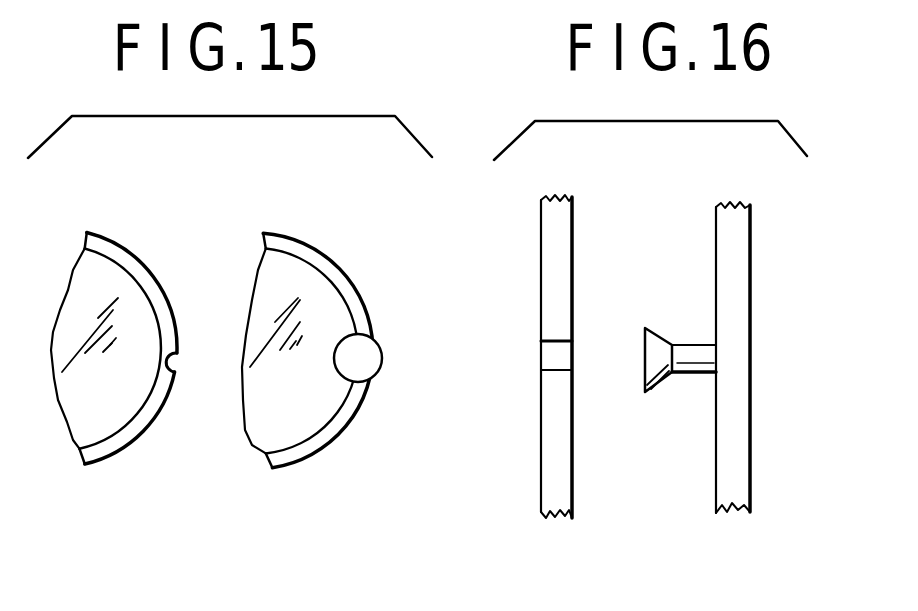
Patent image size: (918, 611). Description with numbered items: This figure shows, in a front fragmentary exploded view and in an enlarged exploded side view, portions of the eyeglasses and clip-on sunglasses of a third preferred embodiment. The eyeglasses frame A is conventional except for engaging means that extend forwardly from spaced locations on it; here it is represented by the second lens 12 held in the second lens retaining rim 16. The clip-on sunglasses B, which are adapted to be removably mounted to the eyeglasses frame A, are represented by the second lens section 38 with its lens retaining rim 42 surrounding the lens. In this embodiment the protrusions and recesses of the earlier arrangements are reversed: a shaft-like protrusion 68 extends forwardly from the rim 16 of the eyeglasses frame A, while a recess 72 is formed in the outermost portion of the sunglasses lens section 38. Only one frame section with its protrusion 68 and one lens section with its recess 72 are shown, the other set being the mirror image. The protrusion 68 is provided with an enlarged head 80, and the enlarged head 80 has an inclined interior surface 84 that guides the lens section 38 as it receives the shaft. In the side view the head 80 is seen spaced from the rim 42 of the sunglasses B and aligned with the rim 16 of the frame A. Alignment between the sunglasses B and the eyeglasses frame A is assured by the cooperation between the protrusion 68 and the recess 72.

In FIG. 15, the second lens 12 is at (305, 412).
In FIG. 15, the second lens retaining rim 16 is at (333, 428).
In FIG. 16, the second lens retaining rim 16 is at (730, 483).
In FIG. 15, the second lens section 38 is at (121, 410).
In FIG. 15, the lens retaining rim 42 is at (130, 252).
In FIG. 16, the lens retaining rim 42 is at (572, 260).
In FIG. 15, the protrusion 68 is at (381, 338).
In FIG. 16, the protrusion 68 is at (695, 345).
In FIG. 15, the recess 72 is at (178, 360).
In FIG. 16, the recess 72 is at (548, 357).
In FIG. 15, the enlarged head 80 is at (382, 373).
In FIG. 16, the enlarged head 80 is at (643, 367).
In FIG. 16, the inclined interior surface 84 is at (660, 382).
In FIG. 15, the eyeglasses frame A is at (323, 257).
In FIG. 16, the eyeglasses frame A is at (754, 363).
In FIG. 15, the clip-on sunglasses B is at (107, 473).
In FIG. 16, the clip-on sunglasses B is at (539, 470).